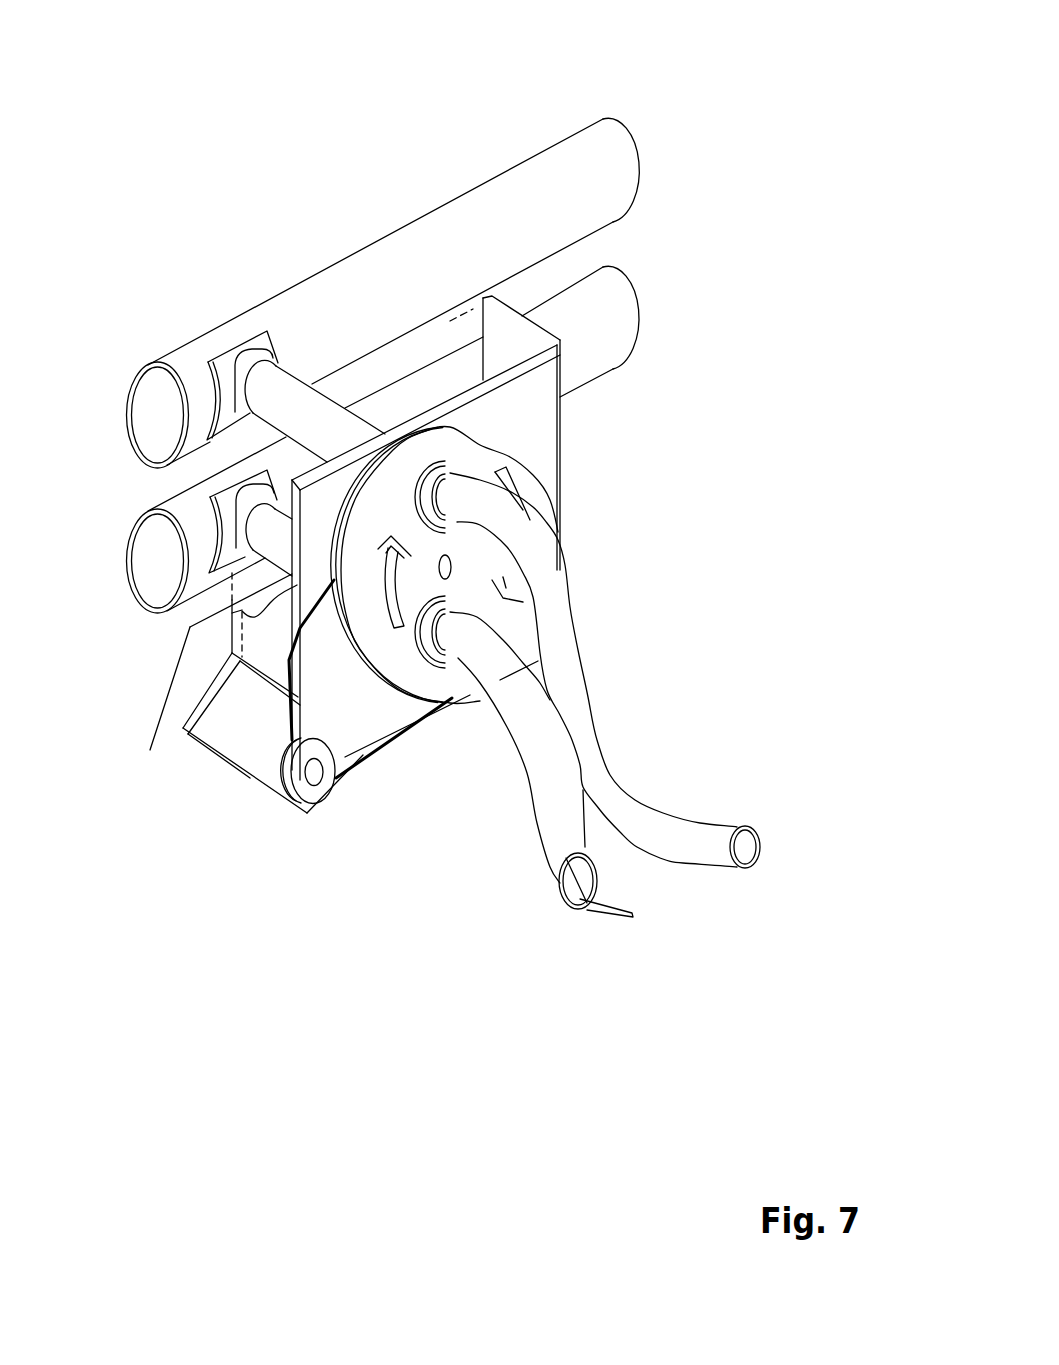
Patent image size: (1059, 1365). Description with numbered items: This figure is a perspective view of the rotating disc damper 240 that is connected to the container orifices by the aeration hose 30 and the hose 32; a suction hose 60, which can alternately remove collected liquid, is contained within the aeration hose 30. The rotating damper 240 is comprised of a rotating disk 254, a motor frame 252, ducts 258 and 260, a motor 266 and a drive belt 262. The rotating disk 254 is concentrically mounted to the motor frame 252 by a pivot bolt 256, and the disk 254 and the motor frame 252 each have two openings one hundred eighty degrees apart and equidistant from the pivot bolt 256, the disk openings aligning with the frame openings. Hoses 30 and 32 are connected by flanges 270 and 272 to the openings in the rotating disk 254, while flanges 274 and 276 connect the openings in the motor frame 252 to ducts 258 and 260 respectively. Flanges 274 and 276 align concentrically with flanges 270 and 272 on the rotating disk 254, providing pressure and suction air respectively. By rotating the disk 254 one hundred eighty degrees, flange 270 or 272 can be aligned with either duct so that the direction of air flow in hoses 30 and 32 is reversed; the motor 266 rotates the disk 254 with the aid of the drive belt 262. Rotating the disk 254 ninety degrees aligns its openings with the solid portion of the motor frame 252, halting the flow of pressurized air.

The aeration hose 30 is at (590, 914).
The hose 32 is at (765, 848).
The suction hose 60 is at (635, 915).
The rotating damper 240 is at (568, 405).
The motor frame 252 is at (560, 427).
The rotating disk 254 is at (558, 534).
The pivot bolt 256 is at (387, 630).
The duct 258 is at (628, 137).
The duct 260 is at (633, 267).
The drive belt 262 is at (415, 727).
The motor 266 is at (240, 770).
The flange 270 is at (450, 660).
The flange 272 is at (462, 463).
The flange 274 is at (295, 378).
The flange 276 is at (150, 740).